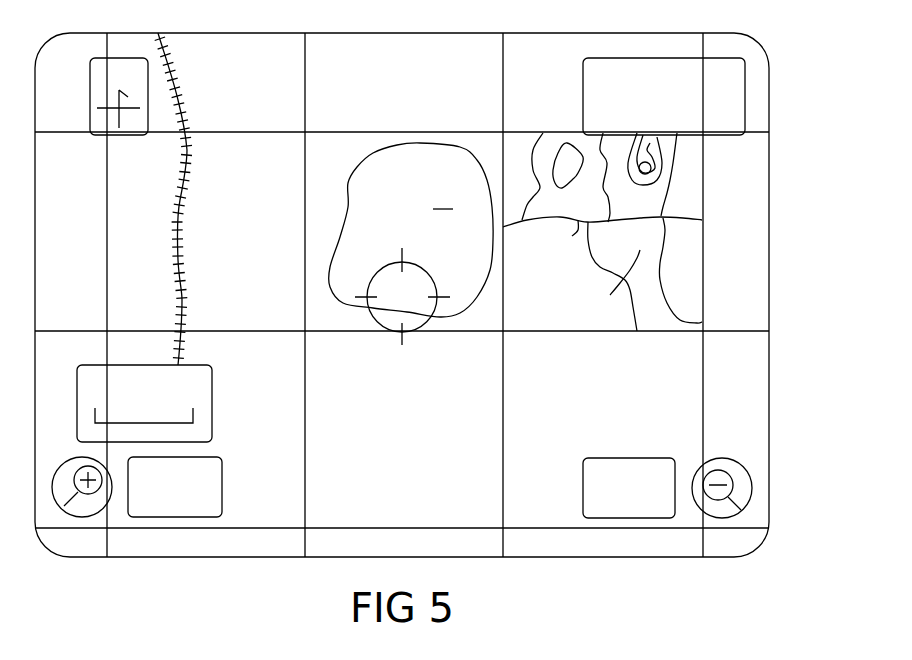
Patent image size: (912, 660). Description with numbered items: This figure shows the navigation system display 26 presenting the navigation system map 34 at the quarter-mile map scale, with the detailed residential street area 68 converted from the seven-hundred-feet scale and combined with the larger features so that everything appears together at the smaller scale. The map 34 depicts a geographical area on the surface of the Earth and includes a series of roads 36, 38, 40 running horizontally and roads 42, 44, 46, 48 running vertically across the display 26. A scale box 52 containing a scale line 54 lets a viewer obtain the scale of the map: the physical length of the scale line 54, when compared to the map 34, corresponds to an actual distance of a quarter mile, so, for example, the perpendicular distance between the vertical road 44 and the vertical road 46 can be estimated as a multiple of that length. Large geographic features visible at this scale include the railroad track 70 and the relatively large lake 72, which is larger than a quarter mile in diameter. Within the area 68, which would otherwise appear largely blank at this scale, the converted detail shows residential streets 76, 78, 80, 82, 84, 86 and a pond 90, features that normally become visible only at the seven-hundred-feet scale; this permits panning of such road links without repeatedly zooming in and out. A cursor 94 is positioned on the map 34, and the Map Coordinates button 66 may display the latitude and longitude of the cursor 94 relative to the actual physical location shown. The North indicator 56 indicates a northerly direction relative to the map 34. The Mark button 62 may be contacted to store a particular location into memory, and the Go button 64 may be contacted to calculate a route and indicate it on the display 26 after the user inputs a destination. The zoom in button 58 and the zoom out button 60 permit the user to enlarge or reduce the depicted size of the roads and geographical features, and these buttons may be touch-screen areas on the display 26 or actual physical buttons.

The display 26 is at (769, 357).
The navigation system map 34 is at (792, 220).
The road 36 is at (380, 528).
The road 38 is at (270, 330).
The road 40 is at (248, 130).
The road 42 is at (107, 190).
The vertical road 44 is at (305, 401).
The vertical road 46 is at (502, 392).
The road 48 is at (701, 355).
The scale box 52 is at (207, 365).
The scale line 54 is at (180, 421).
The North indicator 56 is at (160, 68).
The zoom in button 58 is at (80, 458).
The zoom out button 60 is at (715, 462).
The Mark button 62 is at (222, 490).
The Go button 64 is at (625, 458).
The Map Coordinates button 66 is at (583, 65).
The area 68 is at (538, 291).
The railroad track 70 is at (180, 94).
The lake 72 is at (448, 110).
The residential street 76 is at (538, 195).
The residential street 78 is at (613, 197).
The residential street 80 is at (570, 237).
The residential street 82 is at (592, 237).
The residential street 84 is at (617, 287).
The residential street 86 is at (660, 267).
The pond 90 is at (563, 155).
The cursor 94 is at (430, 270).